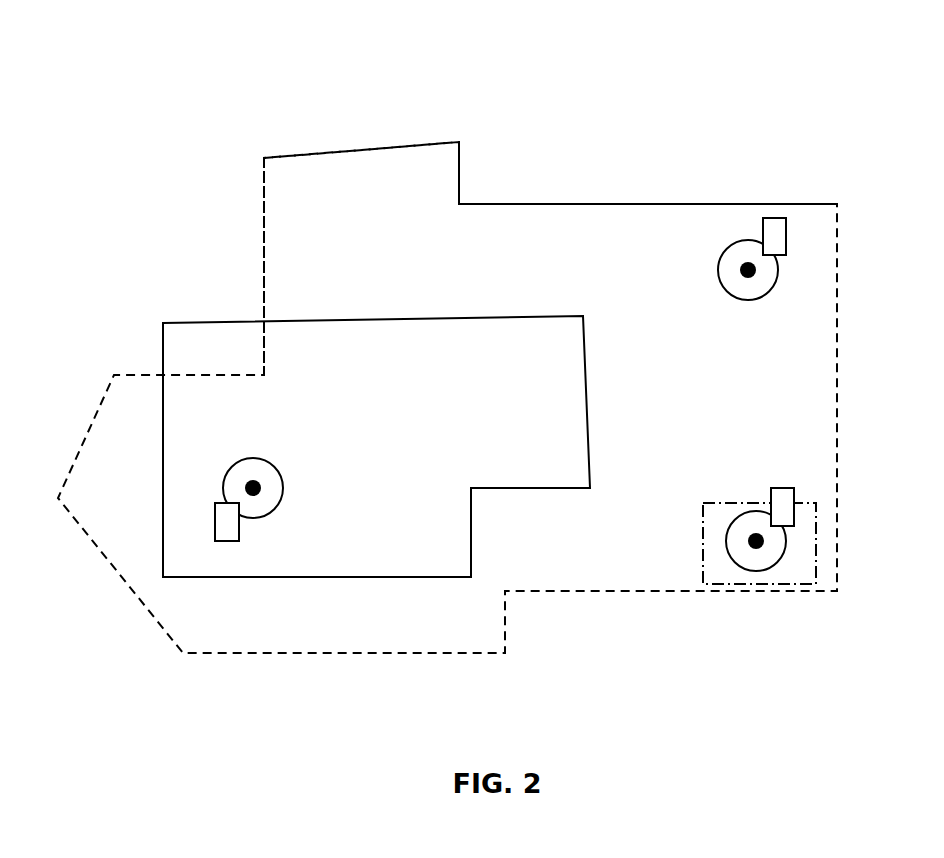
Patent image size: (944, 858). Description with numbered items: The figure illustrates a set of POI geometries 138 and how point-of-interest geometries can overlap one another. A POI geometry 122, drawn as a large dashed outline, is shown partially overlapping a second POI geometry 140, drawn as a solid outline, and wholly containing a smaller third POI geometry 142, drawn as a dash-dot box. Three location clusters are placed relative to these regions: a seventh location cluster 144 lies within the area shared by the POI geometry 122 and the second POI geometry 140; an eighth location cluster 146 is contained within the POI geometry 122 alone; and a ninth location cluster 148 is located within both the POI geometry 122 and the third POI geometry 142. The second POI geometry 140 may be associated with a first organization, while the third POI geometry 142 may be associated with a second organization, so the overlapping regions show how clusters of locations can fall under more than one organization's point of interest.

The set of POI geometries 138 is at (516, 92).
The POI geometry 122 is at (313, 155).
The second POI geometry 140 is at (210, 325).
The third POI geometry 142 is at (730, 503).
The seventh location cluster 144 is at (275, 468).
The eighth location cluster 146 is at (748, 300).
The ninth location cluster 148 is at (755, 510).